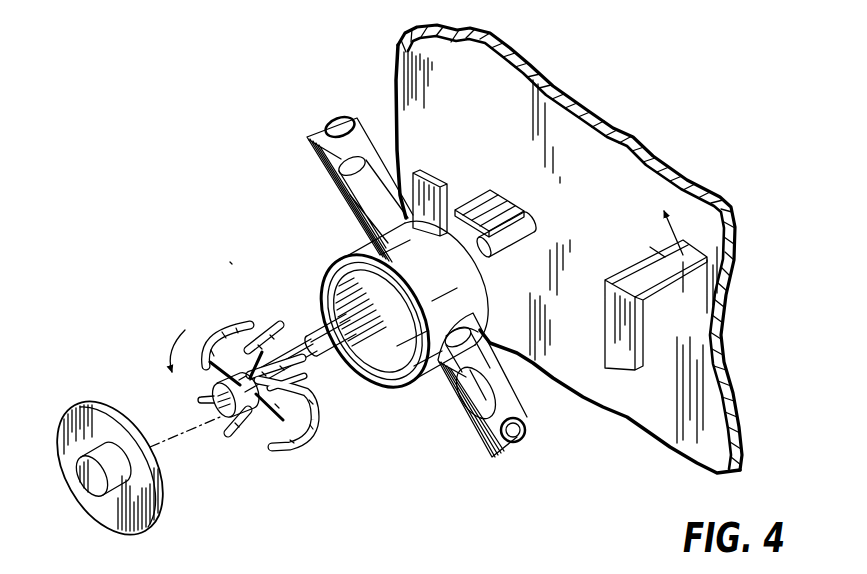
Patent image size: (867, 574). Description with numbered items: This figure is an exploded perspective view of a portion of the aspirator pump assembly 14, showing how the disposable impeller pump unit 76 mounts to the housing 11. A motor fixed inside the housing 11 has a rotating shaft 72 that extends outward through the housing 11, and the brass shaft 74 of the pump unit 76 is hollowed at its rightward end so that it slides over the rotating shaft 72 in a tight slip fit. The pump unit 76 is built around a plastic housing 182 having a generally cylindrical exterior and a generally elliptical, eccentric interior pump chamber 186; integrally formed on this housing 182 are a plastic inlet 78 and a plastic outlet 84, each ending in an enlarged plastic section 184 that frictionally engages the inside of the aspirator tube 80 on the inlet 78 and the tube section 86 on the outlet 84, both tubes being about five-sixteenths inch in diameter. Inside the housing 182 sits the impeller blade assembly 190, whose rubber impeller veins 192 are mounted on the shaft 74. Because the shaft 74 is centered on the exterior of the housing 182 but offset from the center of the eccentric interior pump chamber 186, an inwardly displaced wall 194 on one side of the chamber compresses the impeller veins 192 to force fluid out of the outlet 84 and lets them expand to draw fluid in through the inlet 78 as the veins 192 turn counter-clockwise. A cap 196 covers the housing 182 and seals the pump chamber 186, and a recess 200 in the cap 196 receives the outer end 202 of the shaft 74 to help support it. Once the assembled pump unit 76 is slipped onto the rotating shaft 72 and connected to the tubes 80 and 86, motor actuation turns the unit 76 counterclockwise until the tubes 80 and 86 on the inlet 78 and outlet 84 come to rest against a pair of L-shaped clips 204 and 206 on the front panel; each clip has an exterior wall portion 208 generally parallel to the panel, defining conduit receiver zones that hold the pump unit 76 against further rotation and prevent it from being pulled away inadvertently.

The housing 11 is at (624, 62).
The aspirator pump assembly 14 is at (331, 456).
The rotating shaft 72 is at (526, 240).
The shaft 74 is at (316, 332).
The disposable impeller pump unit 76 is at (230, 262).
The inlet 78 is at (354, 125).
The aspirator tube 80 is at (318, 160).
The outlet 84 is at (478, 333).
The tube section 86 is at (494, 446).
The housing 182 is at (414, 301).
The enlarged plastic sections 184 is at (342, 184).
The interior pump chamber 186 is at (340, 287).
The impeller blade assembly 190 is at (216, 423).
The impeller veins 192 is at (262, 325).
The inwardly displaced wall 194 is at (380, 372).
The cap 196 is at (125, 532).
The recess 200 is at (92, 476).
The outer end 202 is at (188, 403).
The clip 204 is at (479, 194).
The clip 206 is at (617, 274).
The exterior wall portion 208 is at (425, 185).